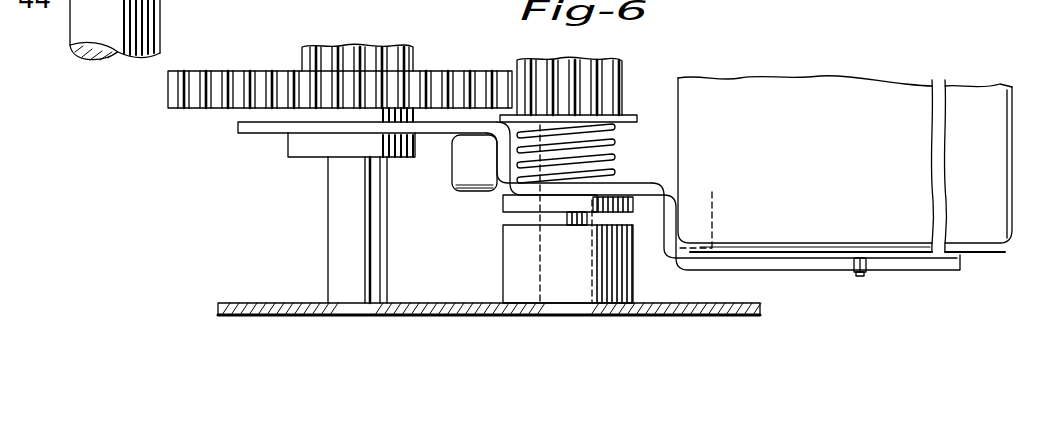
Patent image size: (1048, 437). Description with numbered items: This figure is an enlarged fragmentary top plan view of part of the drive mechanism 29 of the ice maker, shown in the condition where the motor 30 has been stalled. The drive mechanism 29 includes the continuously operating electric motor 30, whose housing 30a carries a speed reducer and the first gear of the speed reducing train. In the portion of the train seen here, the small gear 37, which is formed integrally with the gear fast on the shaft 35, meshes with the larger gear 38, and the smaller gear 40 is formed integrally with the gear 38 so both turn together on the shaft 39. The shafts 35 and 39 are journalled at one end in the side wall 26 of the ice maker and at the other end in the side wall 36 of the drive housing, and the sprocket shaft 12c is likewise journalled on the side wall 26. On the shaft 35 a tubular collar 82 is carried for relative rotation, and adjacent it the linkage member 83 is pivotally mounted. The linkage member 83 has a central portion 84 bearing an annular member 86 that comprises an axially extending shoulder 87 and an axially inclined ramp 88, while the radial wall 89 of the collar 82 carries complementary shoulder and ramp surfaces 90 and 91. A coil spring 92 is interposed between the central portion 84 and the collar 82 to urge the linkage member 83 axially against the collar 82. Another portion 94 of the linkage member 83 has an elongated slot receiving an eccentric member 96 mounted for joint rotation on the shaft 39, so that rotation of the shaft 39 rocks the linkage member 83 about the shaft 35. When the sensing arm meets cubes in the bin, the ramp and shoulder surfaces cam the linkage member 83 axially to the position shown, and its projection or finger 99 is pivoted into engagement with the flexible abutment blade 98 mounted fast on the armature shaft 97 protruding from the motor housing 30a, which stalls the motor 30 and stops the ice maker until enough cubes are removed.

The shaft 12c is at (100, 22).
The gear 38 is at (273, 80).
The gear 40 is at (345, 60).
The gear 37 is at (612, 78).
The coil spring 92 is at (625, 128).
The axially extending wall or shoulder 87 is at (605, 195).
The portion of the linkage member 94 is at (268, 124).
The central portion 84 is at (500, 194).
The linkage member 83 is at (463, 166).
The annular member 86 is at (530, 205).
The tubular collar 82 is at (632, 235).
The radial wall 89 is at (640, 200).
The axially inclined ramp 88 is at (565, 196).
The shaft 35 is at (530, 283).
The ramp surface 91 is at (572, 206).
The shoulder surface 90 is at (548, 212).
The eccentric member 96 is at (298, 150).
The shaft 39 is at (348, 217).
The drive mechanism 29 is at (846, 72).
The electric motor 30 is at (955, 90).
The motor housing 30a is at (890, 170).
The projection or finger 99 is at (808, 258).
The abutment member or flange 98 is at (872, 262).
The armature shaft 97 is at (862, 276).
The side wall 26 is at (730, 312).
The side wall of the housing 36 is at (548, 318).